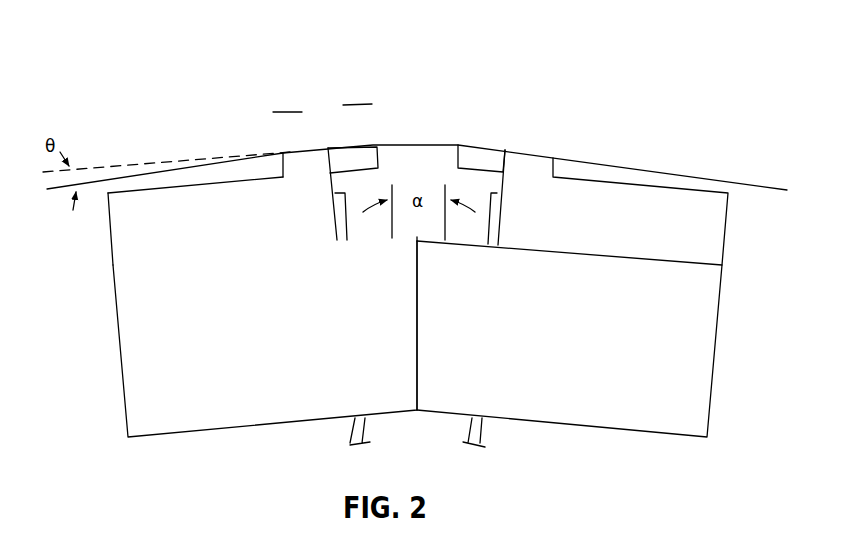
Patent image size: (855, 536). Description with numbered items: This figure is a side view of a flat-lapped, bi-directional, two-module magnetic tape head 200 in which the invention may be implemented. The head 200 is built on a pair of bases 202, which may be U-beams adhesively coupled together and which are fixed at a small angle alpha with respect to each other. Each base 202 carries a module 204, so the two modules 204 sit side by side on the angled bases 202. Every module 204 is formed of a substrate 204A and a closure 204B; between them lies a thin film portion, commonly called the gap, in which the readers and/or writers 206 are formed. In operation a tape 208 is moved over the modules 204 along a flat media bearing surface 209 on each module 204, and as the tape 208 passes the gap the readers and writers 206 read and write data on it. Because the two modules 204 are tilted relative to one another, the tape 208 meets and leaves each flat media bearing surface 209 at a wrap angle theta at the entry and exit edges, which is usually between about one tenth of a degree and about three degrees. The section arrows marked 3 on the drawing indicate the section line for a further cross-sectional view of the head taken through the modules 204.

The two-module magnetic tape head 200 is at (158, 111).
The base 202 is at (120, 327).
The module 204 is at (110, 236).
The substrate 204A is at (167, 210).
The closure 204B is at (458, 158).
The readers and/or writers 206 is at (332, 143).
The tape 208 is at (645, 167).
The media bearing surface 209 is at (288, 144).
The section line of FIG. 3 is at (281, 106).